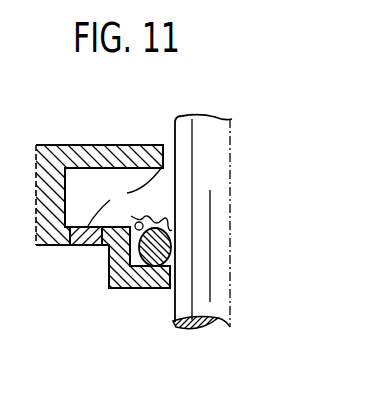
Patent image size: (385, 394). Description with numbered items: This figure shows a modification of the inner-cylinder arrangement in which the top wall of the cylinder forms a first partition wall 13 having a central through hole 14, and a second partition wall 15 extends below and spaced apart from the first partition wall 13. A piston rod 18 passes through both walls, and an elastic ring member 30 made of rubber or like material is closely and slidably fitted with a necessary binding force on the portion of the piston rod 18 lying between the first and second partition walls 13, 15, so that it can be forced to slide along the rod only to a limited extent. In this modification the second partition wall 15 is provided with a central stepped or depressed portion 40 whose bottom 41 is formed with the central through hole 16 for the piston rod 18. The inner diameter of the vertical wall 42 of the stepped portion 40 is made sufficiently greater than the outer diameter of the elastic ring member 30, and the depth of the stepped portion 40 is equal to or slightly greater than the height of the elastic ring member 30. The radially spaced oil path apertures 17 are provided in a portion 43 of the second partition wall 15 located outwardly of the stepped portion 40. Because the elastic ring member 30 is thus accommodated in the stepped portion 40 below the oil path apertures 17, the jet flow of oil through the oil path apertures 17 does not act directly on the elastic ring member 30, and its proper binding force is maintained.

The first partition wall 13 is at (88, 146).
The central through hole 14 is at (170, 144).
The second partition wall 15 is at (109, 282).
The central through hole 16 is at (170, 279).
The oil path apertures 17 is at (73, 246).
The piston rod 18 is at (220, 315).
The elastic ring member 30 is at (174, 249).
The stepped portion 40 is at (138, 288).
The bottom 41 is at (156, 288).
The vertical wall 42 is at (172, 209).
The portion of partition wall 43 is at (117, 227).